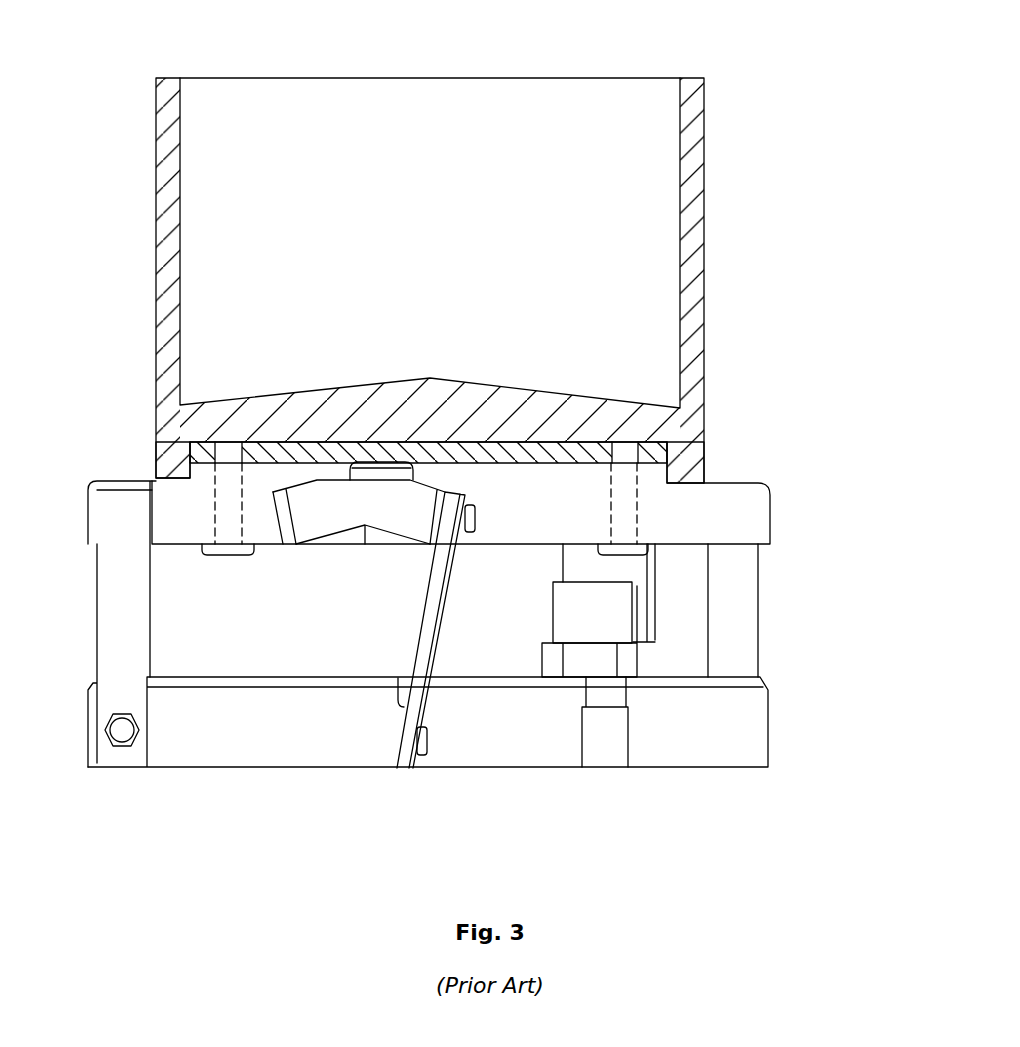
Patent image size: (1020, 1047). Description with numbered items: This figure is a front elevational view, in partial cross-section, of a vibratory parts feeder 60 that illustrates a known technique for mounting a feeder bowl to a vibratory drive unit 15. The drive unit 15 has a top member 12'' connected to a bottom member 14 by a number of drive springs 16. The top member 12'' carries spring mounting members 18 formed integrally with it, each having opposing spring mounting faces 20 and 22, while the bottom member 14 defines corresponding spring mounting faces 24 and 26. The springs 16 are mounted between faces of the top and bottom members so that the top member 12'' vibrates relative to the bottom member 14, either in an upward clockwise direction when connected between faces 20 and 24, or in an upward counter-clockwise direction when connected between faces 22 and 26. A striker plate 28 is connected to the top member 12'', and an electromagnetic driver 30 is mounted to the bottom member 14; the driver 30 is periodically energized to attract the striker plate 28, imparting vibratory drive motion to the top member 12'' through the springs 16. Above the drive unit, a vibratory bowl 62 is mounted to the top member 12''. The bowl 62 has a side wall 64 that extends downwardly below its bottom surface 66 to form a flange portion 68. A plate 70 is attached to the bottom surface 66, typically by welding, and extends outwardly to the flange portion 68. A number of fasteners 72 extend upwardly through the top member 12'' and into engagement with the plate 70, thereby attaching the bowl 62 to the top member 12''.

The top member 12'' is at (395, 533).
The bottom member 14 is at (770, 731).
The vibratory drive unit 15 is at (482, 643).
The drive springs 16 is at (152, 607).
The spring mounting members 18 is at (359, 535).
The spring mounting face 20 is at (448, 528).
The spring mounting face 22 is at (272, 522).
The spring mounting face 24 is at (400, 752).
The spring mounting face 26 is at (596, 742).
The striker plate 28 is at (657, 566).
The electromagnetic driver 30 is at (553, 632).
The vibratory parts feeder 60 is at (481, 266).
The vibratory bowl 62 is at (429, 266).
The side wall 64 is at (156, 185).
The bottom surface 66 is at (563, 436).
The flange portion 68 is at (158, 448).
The plate 70 is at (504, 454).
The fasteners 72 is at (237, 553).